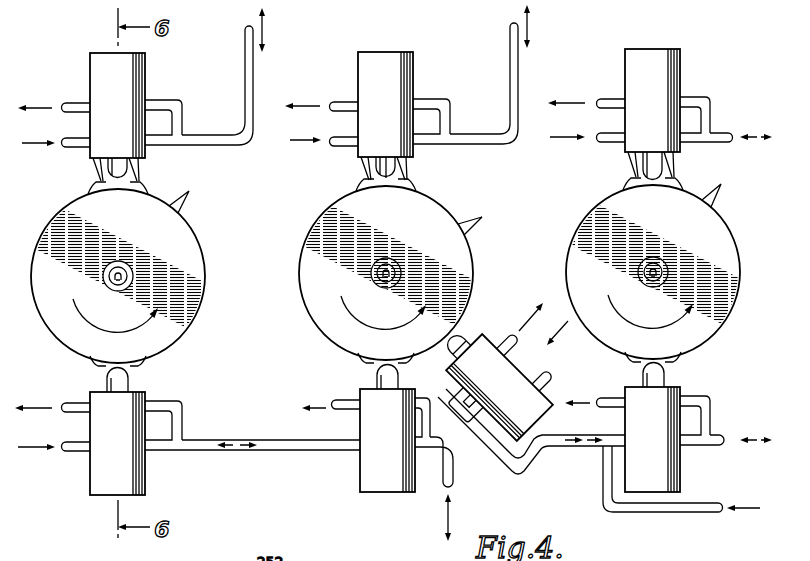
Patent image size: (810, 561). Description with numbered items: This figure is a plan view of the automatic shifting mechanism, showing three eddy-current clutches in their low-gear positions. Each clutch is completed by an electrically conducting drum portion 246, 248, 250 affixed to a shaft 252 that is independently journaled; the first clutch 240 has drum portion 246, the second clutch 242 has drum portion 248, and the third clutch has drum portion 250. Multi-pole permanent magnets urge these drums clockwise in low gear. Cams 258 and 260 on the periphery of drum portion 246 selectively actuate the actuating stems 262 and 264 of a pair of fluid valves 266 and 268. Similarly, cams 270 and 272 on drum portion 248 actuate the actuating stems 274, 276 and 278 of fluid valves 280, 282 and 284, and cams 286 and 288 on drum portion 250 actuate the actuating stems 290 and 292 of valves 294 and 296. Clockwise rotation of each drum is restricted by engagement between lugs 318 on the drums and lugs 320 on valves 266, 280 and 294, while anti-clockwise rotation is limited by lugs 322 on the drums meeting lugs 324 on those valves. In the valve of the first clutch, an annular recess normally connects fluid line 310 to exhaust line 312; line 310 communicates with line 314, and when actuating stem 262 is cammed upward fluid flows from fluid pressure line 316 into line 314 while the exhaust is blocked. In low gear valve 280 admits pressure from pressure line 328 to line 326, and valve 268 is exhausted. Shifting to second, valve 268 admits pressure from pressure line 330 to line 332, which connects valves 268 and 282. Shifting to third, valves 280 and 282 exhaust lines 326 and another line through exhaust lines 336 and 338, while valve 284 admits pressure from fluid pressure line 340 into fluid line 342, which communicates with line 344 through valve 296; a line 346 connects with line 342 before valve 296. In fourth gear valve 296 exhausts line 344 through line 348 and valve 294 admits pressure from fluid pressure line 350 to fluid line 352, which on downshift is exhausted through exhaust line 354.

The eddy-current clutch 240 is at (205, 251).
The eddy-current clutch 242 is at (462, 216).
The drum portion 246 is at (724, 232).
The drum portion 248 is at (400, 218).
The drum portion 250 is at (653, 272).
The shaft 252 is at (110, 276).
The cam 258 is at (78, 356).
The cam 260 is at (128, 187).
The actuating stem 262 is at (117, 160).
The actuating stem 264 is at (131, 381).
The fluid valve 266 is at (93, 62).
The fluid valve 268 is at (92, 486).
The cam 270 is at (398, 187).
The cam 272 is at (375, 365).
The actuating stem 274 is at (386, 165).
The actuating stem 276 is at (378, 380).
The actuating stem 278 is at (461, 345).
The fluid valve 280 is at (416, 62).
The fluid valve 282 is at (358, 479).
The fluid valve 284 is at (547, 380).
The cam 286 is at (690, 190).
The cam 288 is at (668, 366).
The actuating stem 290 is at (650, 165).
The actuating stem 292 is at (663, 381).
The valve 294 is at (684, 68).
The valve 296 is at (683, 471).
The fluid line 310 is at (158, 101).
The exhaust line 312 is at (72, 102).
The line 314 is at (254, 74).
The fluid pressure line 316 is at (74, 148).
The lug 318 is at (84, 192).
The lug 320 is at (95, 168).
The lug 322 is at (190, 210).
The lug 324 is at (140, 168).
The line 326 is at (519, 67).
The pressure line 328 is at (345, 138).
The pressure line 330 is at (72, 452).
The line 332 is at (210, 450).
The exhaust line 336 is at (340, 102).
The exhaust line 338 is at (340, 410).
The fluid pressure line 340 is at (549, 348).
The fluid line 342 is at (526, 470).
The line 344 is at (718, 437).
The line 346 is at (628, 512).
The line 348 is at (610, 402).
The fluid pressure line 350 is at (608, 136).
The fluid line 352 is at (722, 131).
The exhaust line 354 is at (454, 478).